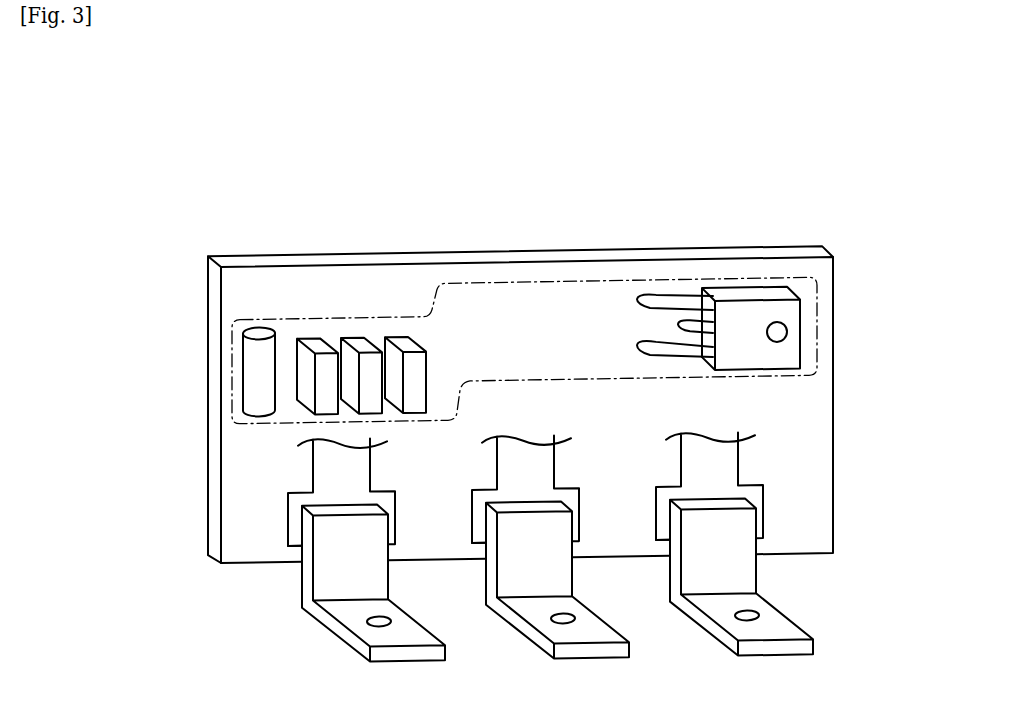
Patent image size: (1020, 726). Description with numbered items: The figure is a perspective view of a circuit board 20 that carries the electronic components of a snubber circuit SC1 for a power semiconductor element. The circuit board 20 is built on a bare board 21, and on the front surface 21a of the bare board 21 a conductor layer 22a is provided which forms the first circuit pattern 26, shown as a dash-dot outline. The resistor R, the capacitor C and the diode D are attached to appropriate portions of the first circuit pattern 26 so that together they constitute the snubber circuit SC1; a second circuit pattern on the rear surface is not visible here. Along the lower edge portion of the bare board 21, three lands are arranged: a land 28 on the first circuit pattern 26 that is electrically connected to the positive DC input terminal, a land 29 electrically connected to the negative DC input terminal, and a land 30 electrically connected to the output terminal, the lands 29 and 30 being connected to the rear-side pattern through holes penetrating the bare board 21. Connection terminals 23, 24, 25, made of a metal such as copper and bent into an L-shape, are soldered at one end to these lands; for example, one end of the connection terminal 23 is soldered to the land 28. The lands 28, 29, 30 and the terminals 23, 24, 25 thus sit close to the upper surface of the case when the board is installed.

The circuit board 20 is at (186, 308).
The bare board 21 is at (548, 251).
The front surface 21a is at (410, 290).
The resistor R is at (260, 334).
The capacitor C is at (357, 344).
The diode D is at (762, 318).
The snubber circuit SC1 is at (817, 317).
The first circuit pattern 26 is at (737, 462).
The conductor layer 22a is at (313, 469).
The land 28 is at (287, 547).
The land 29 is at (471, 547).
The land 30 is at (655, 527).
The connection terminal 23 is at (345, 641).
The connection terminal 24 is at (537, 645).
The connection terminal 25 is at (709, 634).